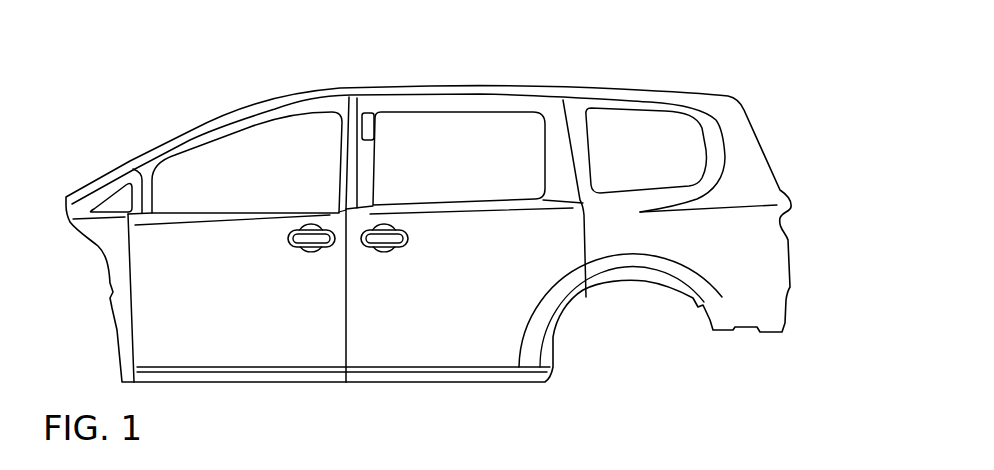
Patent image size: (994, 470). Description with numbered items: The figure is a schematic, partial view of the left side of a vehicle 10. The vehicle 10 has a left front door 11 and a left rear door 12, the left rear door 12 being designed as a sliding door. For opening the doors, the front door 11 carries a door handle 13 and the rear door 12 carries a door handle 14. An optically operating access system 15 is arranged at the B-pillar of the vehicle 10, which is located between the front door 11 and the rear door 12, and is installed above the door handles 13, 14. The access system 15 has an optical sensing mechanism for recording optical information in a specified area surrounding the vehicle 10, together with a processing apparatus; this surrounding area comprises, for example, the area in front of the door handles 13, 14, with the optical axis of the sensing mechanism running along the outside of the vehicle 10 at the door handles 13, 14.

The vehicle 10 is at (690, 74).
The left front door 11 is at (187, 175).
The left rear door 12 is at (510, 128).
The door handle 13 is at (310, 238).
The door handle 14 is at (392, 238).
The optically operating access system 15 is at (368, 128).